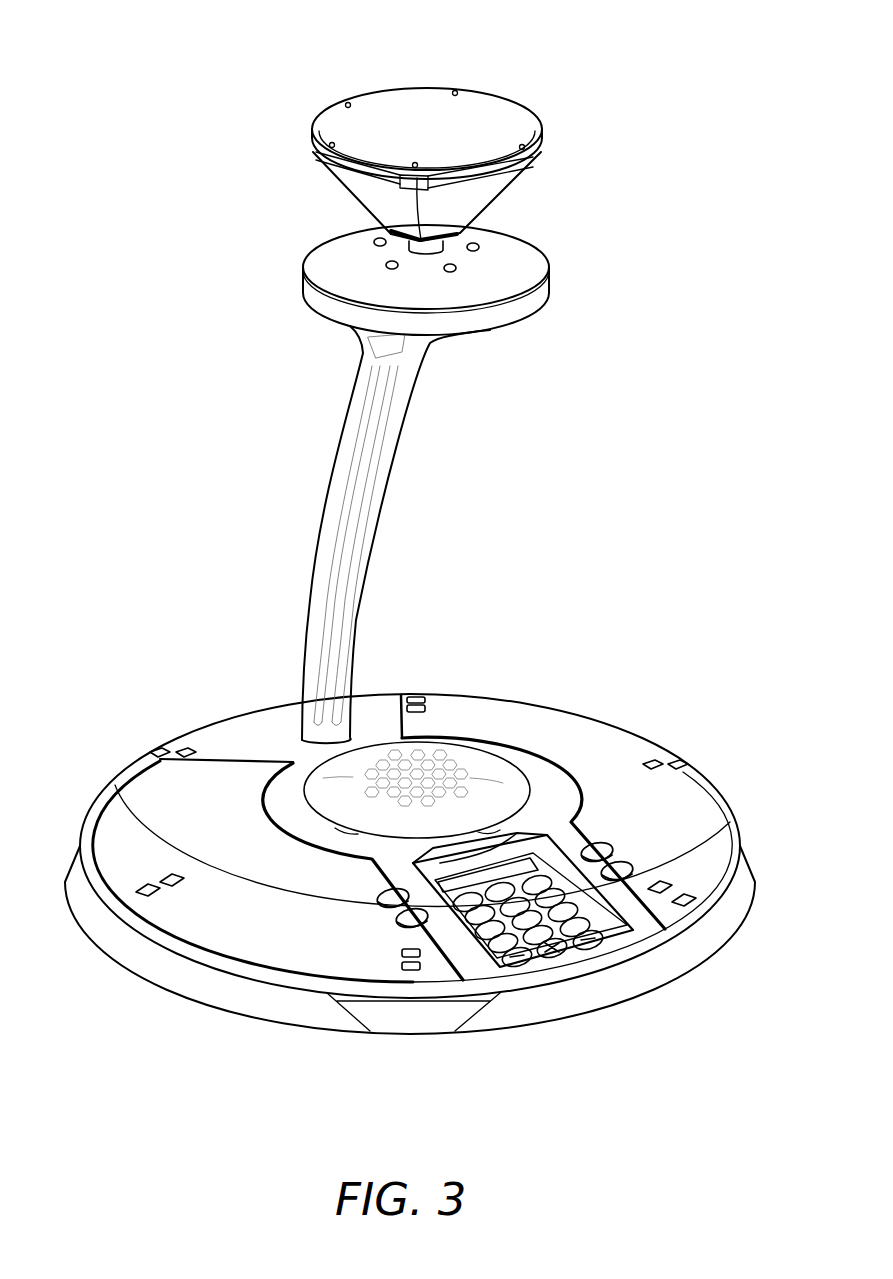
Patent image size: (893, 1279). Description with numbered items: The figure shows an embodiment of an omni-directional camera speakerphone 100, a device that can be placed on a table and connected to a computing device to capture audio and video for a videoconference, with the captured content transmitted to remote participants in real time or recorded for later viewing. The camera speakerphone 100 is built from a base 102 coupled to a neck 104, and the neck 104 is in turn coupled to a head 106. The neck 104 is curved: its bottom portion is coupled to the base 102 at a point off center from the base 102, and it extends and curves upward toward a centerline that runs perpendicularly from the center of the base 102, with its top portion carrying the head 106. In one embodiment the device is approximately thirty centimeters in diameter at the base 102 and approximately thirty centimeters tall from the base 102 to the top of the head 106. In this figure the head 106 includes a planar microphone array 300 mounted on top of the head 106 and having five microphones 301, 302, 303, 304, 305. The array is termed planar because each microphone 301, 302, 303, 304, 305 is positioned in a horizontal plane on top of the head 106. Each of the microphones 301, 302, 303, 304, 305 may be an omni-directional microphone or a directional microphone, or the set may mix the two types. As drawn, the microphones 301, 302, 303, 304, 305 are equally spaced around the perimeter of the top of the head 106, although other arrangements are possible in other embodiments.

The camera speakerphone 100 is at (158, 1067).
The base 102 is at (163, 968).
The neck 104 is at (322, 515).
The head 106 is at (550, 95).
The planar microphone array 300 is at (117, 50).
The microphone 301 is at (455, 90).
The microphone 302 is at (523, 144).
The microphone 303 is at (414, 162).
The microphone 304 is at (329, 145).
The microphone 305 is at (346, 102).